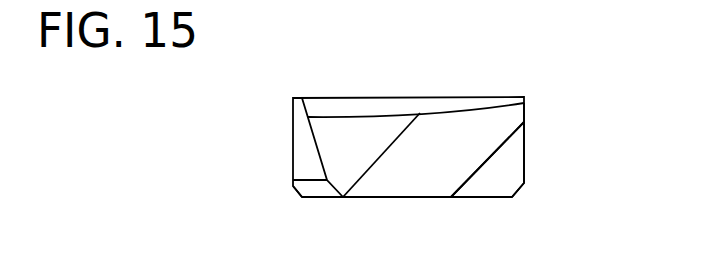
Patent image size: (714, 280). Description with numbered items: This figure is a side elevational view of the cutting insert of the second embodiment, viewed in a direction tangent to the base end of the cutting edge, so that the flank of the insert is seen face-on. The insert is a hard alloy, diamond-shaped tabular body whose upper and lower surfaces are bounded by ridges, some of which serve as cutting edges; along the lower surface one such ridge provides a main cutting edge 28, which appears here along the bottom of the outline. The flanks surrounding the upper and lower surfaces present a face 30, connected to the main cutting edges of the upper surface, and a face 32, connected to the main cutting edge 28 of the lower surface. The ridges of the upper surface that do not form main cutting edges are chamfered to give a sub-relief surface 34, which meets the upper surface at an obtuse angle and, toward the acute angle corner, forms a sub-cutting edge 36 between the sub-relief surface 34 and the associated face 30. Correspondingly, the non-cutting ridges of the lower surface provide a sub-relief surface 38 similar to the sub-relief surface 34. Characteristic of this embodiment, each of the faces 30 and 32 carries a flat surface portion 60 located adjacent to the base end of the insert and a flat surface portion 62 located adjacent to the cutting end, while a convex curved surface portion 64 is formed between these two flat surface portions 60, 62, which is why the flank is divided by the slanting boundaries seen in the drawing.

The main cutting edge 28 is at (433, 198).
The face 30 is at (302, 153).
The face 32 is at (470, 130).
The sub-relief surface 34 is at (395, 108).
The sub-cutting edge 36 is at (292, 98).
The sub-relief surface 38 is at (312, 195).
The flat surface portion 60 is at (502, 162).
The flat surface portion 62 is at (340, 163).
The convex curved surface portion 64 is at (543, 122).